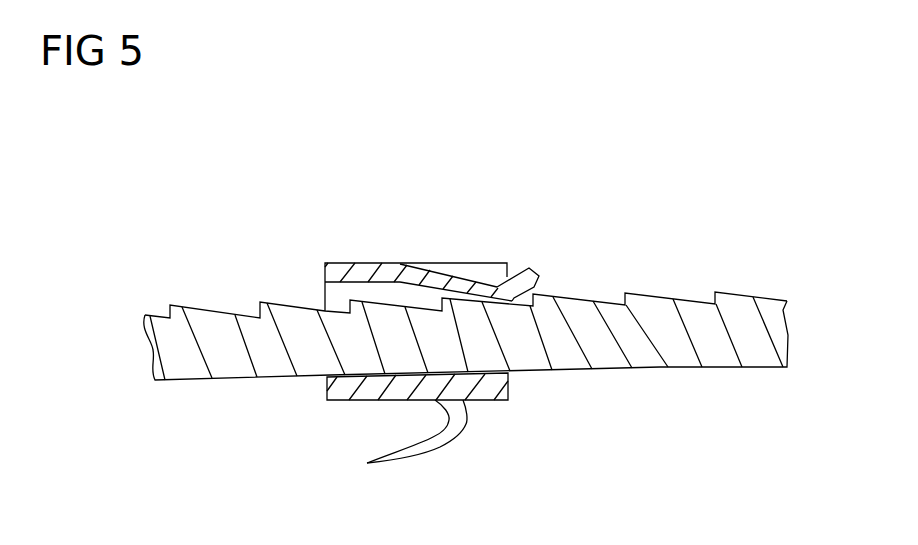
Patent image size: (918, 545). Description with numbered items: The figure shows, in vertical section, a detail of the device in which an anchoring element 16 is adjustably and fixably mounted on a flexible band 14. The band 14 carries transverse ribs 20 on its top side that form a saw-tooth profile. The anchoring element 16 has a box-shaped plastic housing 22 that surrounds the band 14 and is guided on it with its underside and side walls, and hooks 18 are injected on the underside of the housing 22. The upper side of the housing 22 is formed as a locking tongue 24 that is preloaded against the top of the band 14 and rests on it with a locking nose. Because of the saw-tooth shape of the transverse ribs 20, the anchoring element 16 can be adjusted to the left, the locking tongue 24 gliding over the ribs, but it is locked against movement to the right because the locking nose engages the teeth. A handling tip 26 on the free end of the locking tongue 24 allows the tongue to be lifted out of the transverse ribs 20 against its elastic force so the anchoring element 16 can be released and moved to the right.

The band 14 is at (677, 355).
The anchoring element 16 is at (405, 225).
The hooks 18 is at (447, 440).
The transverse ribs 20 is at (740, 295).
The housing 22 is at (341, 290).
The locking tongue 24 is at (460, 282).
The handling tip 26 is at (530, 267).